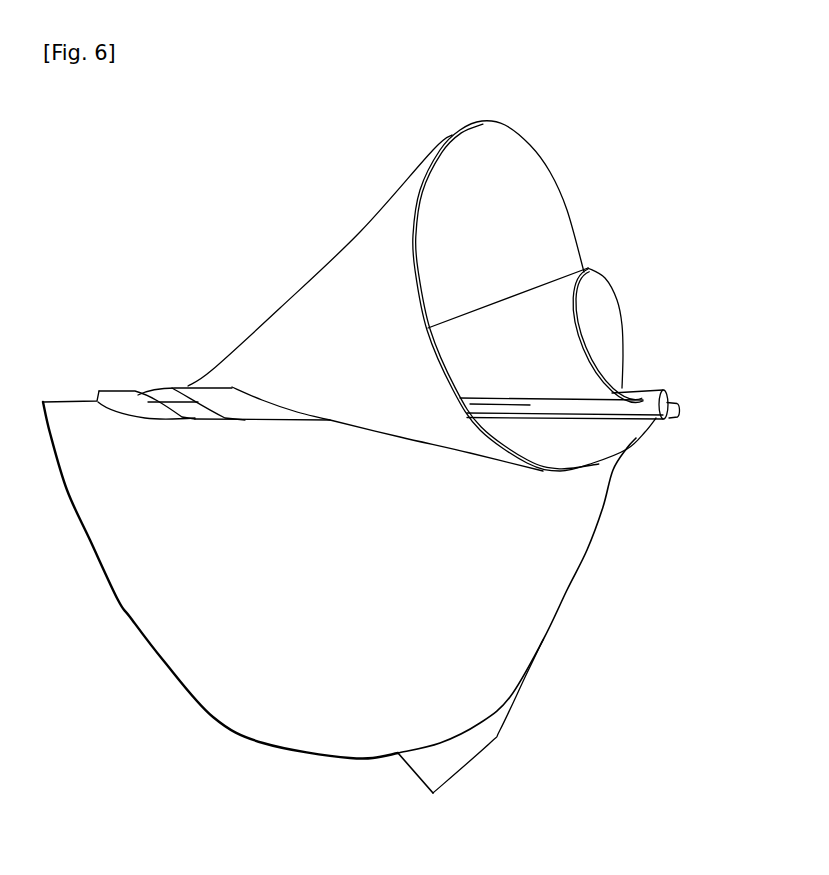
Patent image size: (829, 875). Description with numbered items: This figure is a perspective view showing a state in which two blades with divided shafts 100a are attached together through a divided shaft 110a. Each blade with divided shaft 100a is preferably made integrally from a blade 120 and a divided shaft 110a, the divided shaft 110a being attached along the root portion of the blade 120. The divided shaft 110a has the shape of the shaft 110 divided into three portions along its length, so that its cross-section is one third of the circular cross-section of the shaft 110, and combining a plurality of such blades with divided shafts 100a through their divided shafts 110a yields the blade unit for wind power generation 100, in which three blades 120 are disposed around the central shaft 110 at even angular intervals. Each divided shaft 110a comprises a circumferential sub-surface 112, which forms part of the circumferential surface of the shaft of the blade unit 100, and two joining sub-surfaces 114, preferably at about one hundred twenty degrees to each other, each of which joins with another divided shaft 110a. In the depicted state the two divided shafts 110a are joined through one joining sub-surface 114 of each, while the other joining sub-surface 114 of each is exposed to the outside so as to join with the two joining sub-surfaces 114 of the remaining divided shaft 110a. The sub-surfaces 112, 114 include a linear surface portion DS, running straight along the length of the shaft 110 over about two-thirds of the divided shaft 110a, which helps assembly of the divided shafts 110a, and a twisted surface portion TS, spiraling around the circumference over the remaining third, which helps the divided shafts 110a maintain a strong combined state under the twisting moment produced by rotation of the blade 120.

The blade unit for wind power generation 100 is at (110, 162).
The blade with divided shaft 100a is at (530, 137).
The blade 120 is at (543, 207).
The shaft 110 is at (680, 385).
The divided shaft 110a is at (679, 408).
The circumferential sub-surface 112 is at (548, 410).
The joining sub-surface 114 is at (648, 390).
The linear surface portion DS is at (513, 407).
The twisted surface portion TS is at (168, 397).